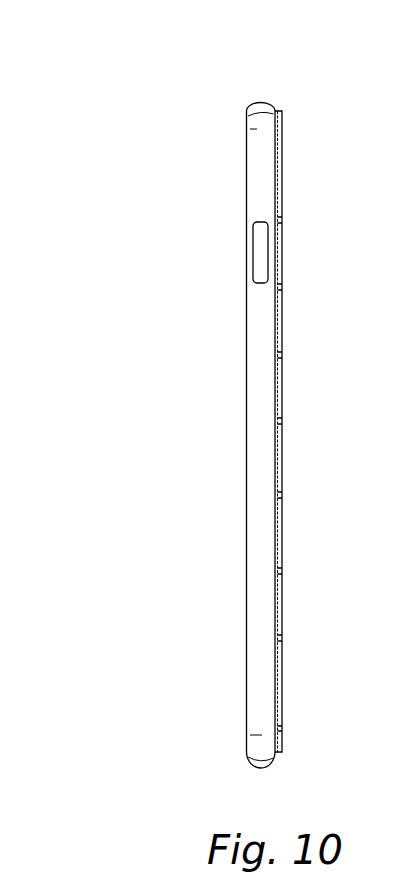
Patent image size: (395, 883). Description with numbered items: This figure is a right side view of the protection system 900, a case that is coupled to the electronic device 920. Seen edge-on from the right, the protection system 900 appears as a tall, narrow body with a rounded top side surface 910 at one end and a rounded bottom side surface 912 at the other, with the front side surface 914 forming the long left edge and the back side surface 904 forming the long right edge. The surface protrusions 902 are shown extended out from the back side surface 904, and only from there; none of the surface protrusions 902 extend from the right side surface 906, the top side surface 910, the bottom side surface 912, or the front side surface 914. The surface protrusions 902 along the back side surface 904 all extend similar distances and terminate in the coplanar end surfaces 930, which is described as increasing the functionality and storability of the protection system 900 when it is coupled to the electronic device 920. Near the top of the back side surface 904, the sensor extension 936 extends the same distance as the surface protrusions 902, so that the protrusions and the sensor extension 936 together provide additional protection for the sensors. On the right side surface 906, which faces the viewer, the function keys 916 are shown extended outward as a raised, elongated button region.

The protection system 900 is at (148, 47).
The surface protrusions 902 is at (284, 318).
The back side surface 904 is at (281, 160).
The right side surface 906 is at (247, 153).
The top side surface 910 is at (260, 102).
The bottom side surface 912 is at (257, 771).
The front side surface 914 is at (247, 358).
The function keys 916 is at (253, 264).
The electronic device 920 is at (246, 515).
The coplanar end surfaces 930 is at (283, 450).
The sensor extension 936 is at (281, 121).